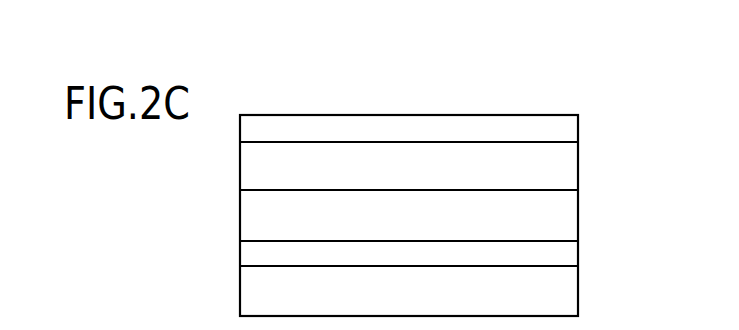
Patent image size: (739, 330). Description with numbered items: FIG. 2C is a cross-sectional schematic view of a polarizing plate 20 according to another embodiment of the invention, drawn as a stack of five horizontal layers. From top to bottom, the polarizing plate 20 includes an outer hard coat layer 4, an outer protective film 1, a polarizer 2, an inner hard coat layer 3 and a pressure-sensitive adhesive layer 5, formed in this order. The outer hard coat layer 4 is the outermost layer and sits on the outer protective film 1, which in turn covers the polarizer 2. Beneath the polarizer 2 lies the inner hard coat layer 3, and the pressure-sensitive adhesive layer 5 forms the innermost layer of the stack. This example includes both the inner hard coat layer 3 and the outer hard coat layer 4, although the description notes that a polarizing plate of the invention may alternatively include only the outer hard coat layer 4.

The polarizing plate 20 is at (562, 87).
The outer hard coat layer 4 is at (578, 129).
The outer protective film 1 is at (578, 166).
The polarizer 2 is at (578, 218).
The inner hard coat layer 3 is at (578, 255).
The pressure-sensitive adhesive layer 5 is at (578, 291).